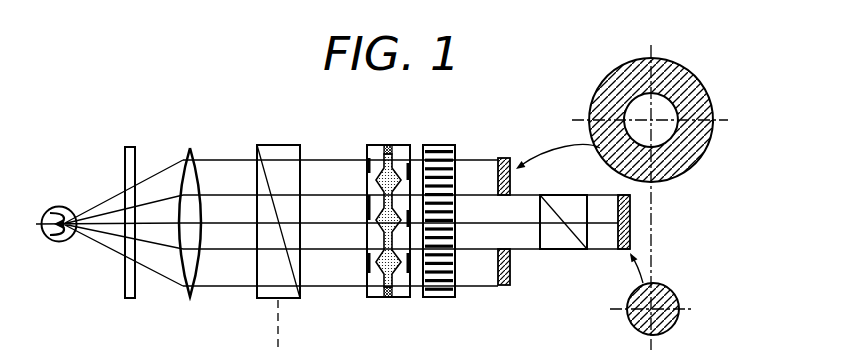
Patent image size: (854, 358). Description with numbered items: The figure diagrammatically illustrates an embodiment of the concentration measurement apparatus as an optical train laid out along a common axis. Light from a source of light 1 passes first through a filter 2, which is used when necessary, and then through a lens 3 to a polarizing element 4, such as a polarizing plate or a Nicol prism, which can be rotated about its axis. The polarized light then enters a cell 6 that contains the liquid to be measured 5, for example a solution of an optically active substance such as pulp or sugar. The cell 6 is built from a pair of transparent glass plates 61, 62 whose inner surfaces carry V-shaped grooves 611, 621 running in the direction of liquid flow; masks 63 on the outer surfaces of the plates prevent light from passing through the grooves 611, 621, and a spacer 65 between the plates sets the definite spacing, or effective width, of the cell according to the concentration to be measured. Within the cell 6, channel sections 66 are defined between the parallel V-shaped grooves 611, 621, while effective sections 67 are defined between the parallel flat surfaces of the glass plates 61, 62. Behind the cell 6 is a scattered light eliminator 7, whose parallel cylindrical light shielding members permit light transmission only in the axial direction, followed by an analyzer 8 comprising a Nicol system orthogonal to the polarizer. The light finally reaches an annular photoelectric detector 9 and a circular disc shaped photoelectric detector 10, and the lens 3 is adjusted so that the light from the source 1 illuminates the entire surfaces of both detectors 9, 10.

The source of light 1 is at (59, 206).
The filter 2 is at (133, 146).
The lens 3 is at (190, 148).
The polarizing element 4 is at (283, 152).
The liquid to be measured 5 is at (391, 155).
The cell 6 is at (379, 216).
The scattered light eliminator 7 is at (440, 147).
The analyzer 8 is at (563, 247).
The annular photoelectric detector 9 is at (512, 287).
The circular disc shaped photoelectric detector 10 is at (624, 246).
The transparent glass plate 61 is at (376, 292).
The transparent glass plate 62 is at (404, 296).
The mask 63 is at (367, 262).
The spacer 65 is at (388, 298).
The channel section 66 is at (380, 217).
The effective section 67 is at (383, 244).
The V-shaped groove 611 is at (378, 177).
The V-shaped groove 621 is at (408, 163).